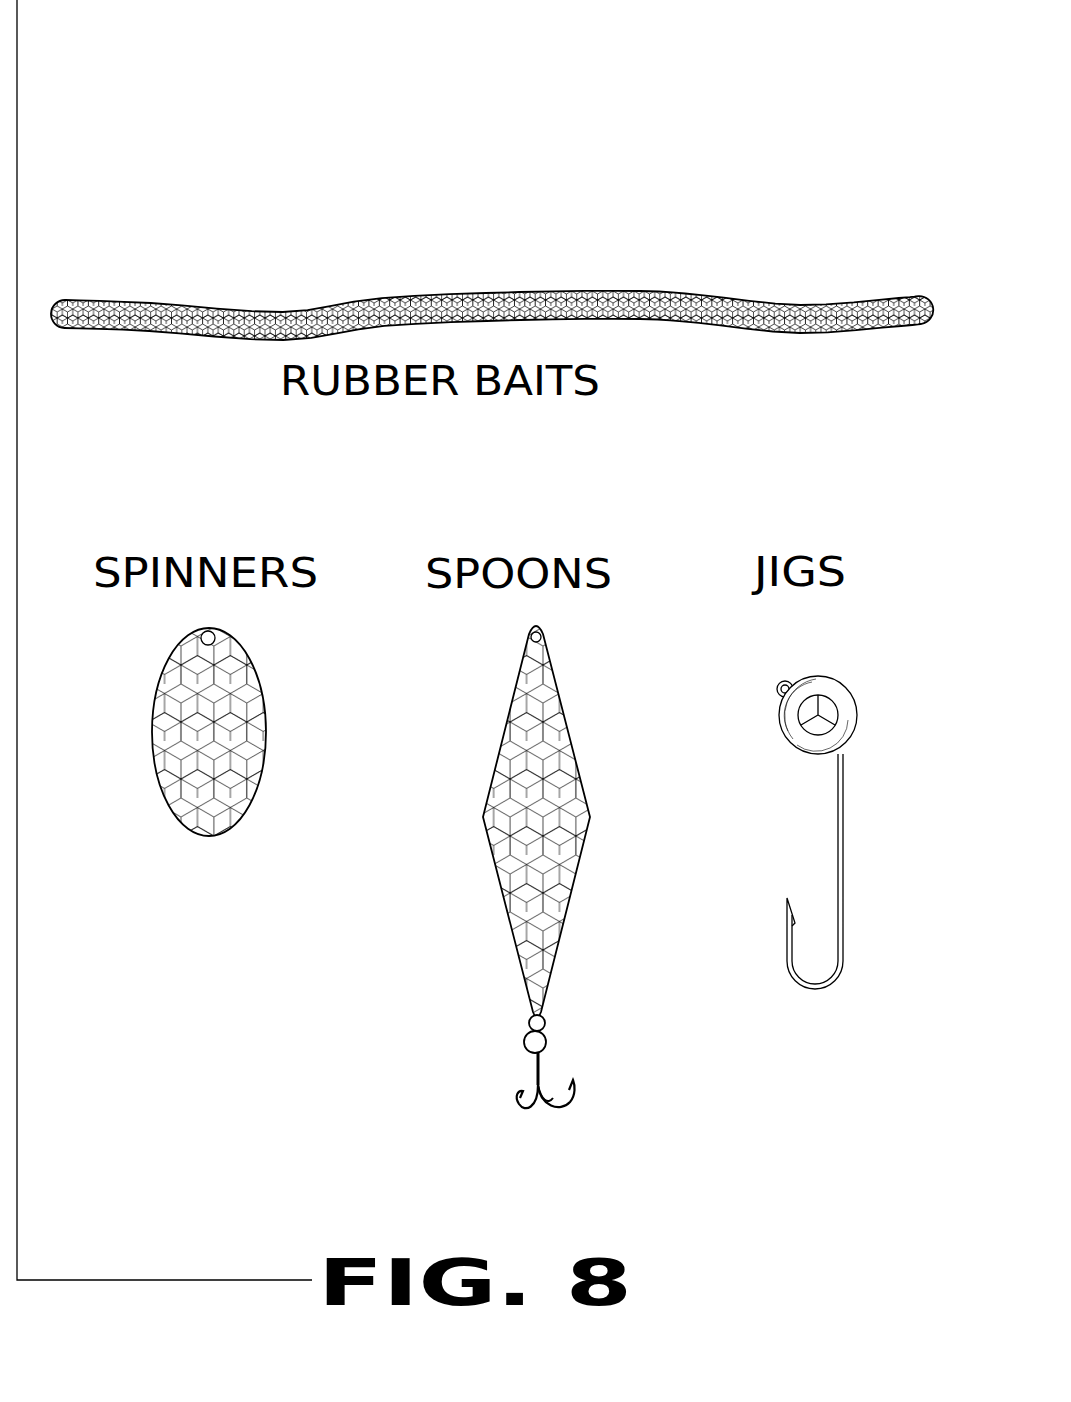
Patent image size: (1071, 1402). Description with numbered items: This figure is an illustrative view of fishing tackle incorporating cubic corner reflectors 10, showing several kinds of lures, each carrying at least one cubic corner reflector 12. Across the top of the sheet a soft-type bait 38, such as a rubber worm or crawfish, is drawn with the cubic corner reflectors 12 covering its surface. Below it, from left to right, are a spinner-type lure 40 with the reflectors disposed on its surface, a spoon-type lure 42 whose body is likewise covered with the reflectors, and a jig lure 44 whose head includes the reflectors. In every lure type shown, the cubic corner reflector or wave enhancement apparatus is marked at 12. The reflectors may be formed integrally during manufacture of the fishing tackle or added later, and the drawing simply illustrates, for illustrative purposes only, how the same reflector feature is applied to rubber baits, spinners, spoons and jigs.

The fishing tackle incorporating cubic corner reflector(s) 10 is at (823, 157).
The cubic corner reflector 12 is at (398, 305).
The soft-type bait 38 is at (145, 335).
The spinner-type lure 40 is at (265, 703).
The spoon-type lure 42 is at (577, 763).
The jig lure 44 is at (852, 741).